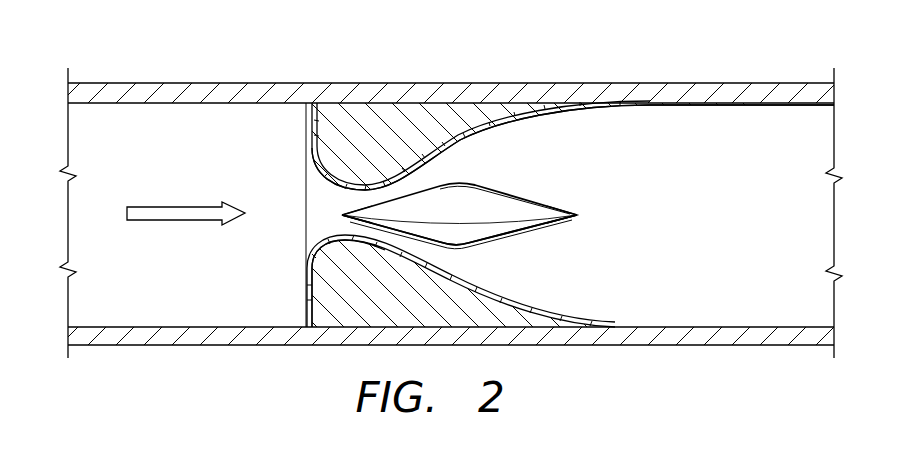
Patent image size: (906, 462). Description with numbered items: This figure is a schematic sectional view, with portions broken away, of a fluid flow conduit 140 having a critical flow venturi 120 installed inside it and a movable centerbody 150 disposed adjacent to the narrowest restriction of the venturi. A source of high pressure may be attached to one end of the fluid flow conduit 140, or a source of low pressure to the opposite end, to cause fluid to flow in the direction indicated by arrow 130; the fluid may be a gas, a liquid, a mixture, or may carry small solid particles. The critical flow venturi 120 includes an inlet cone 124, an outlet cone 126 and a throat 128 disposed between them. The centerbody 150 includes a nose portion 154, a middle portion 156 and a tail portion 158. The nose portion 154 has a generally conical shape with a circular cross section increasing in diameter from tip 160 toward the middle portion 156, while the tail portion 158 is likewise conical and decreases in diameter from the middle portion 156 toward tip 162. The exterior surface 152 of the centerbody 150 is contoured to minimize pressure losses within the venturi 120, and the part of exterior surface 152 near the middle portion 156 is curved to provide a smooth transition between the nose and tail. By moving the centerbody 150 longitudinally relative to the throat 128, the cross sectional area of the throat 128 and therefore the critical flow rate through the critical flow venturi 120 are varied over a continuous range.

The fluid flow conduit 140 is at (118, 90).
The exterior surface 152 is at (399, 190).
The nose portion 154 is at (389, 245).
The critical flow venturi 120 is at (501, 140).
The outlet cone 126 is at (507, 302).
The throat 128 is at (337, 235).
The inlet cone 124 is at (307, 262).
The centerbody 150 is at (566, 203).
The middle portion 156 is at (461, 208).
The tail portion 158 is at (527, 209).
The tip 160 is at (343, 214).
The tip 162 is at (580, 216).
The arrow 130 is at (162, 205).